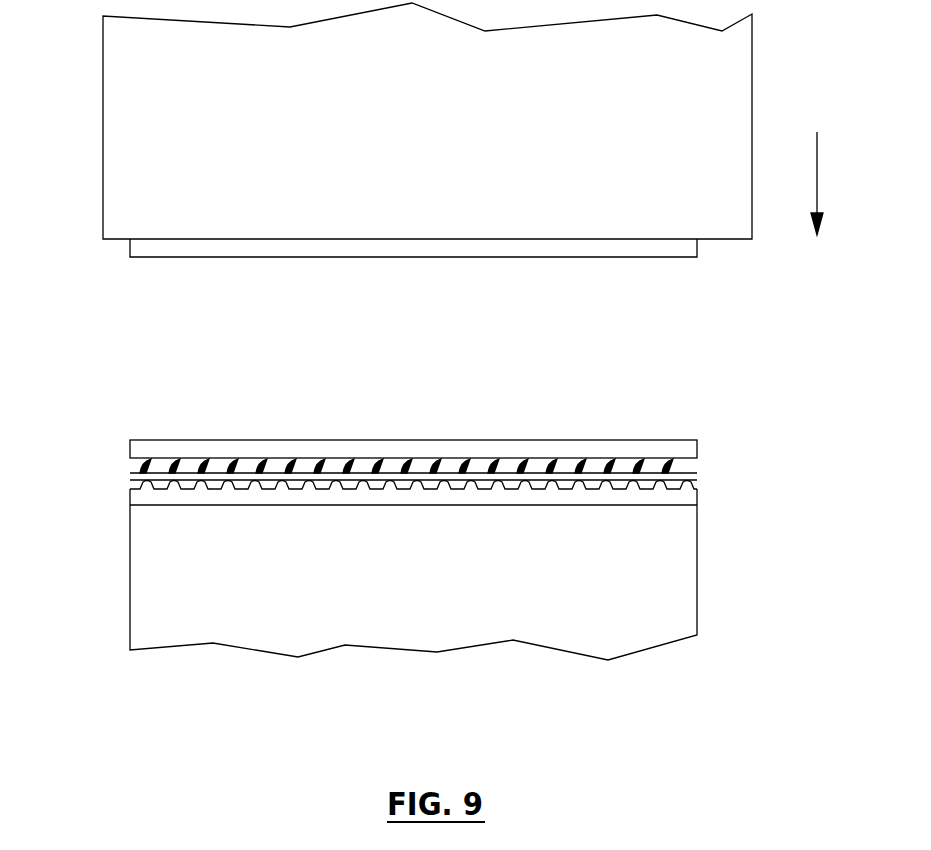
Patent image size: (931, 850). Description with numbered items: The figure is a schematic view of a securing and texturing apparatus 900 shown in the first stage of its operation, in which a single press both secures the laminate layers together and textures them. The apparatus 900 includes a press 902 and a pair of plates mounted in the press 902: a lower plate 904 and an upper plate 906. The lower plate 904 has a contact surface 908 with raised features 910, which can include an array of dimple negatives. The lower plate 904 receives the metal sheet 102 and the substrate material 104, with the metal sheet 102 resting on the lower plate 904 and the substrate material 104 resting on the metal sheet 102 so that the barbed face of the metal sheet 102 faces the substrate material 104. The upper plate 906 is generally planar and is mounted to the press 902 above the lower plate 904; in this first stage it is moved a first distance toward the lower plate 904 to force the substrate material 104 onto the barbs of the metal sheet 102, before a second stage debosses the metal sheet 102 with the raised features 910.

The securing and texturing apparatus 900 is at (803, 403).
The press 902 is at (128, 200).
The lower plate 904 is at (653, 493).
The upper plate 906 is at (528, 248).
The contact surface 908 is at (330, 483).
The raised features 910 is at (172, 488).
The substrate material 104 is at (152, 450).
The metal sheet 102 is at (132, 473).